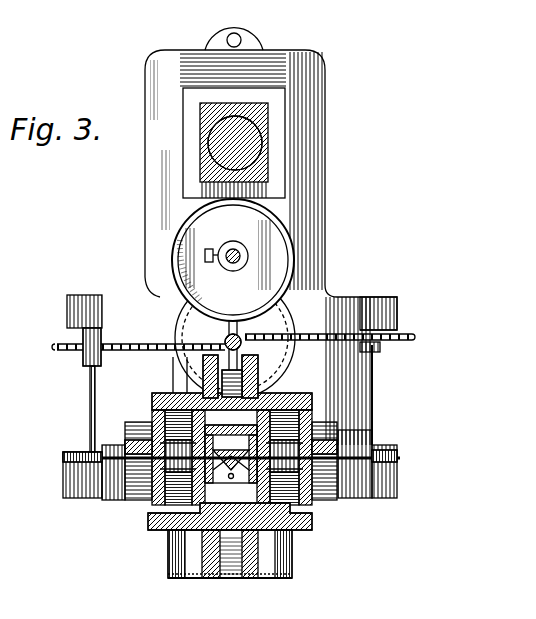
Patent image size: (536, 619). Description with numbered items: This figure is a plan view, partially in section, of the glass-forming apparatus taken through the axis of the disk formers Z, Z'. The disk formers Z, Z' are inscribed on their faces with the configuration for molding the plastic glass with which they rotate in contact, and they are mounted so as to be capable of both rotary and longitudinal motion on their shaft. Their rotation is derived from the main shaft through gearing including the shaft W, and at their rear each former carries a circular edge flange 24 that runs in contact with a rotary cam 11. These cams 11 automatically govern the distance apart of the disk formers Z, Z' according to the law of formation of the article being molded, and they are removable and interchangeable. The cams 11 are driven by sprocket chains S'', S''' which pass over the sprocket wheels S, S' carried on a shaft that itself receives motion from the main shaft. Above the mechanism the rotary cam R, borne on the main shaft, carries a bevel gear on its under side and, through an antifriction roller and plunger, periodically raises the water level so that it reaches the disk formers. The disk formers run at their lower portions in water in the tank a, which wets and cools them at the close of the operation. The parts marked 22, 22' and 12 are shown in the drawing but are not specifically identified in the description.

The cam R is at (270, 248).
The shaft W is at (222, 333).
The sprocket-wheel S is at (234, 358).
The sprocket-wheel S' is at (138, 335).
The sprocket-chain S'' is at (168, 373).
The sprocket-chain S''' is at (341, 328).
The chain guide block 22 is at (75, 373).
The chain guide block 22' is at (392, 330).
The frame casing 12 is at (168, 428).
The circular edge flange 24 is at (345, 440).
The rotary cam 11 is at (61, 456).
The disk former Z is at (178, 522).
The disk former Z' is at (263, 522).
The tank a is at (276, 579).